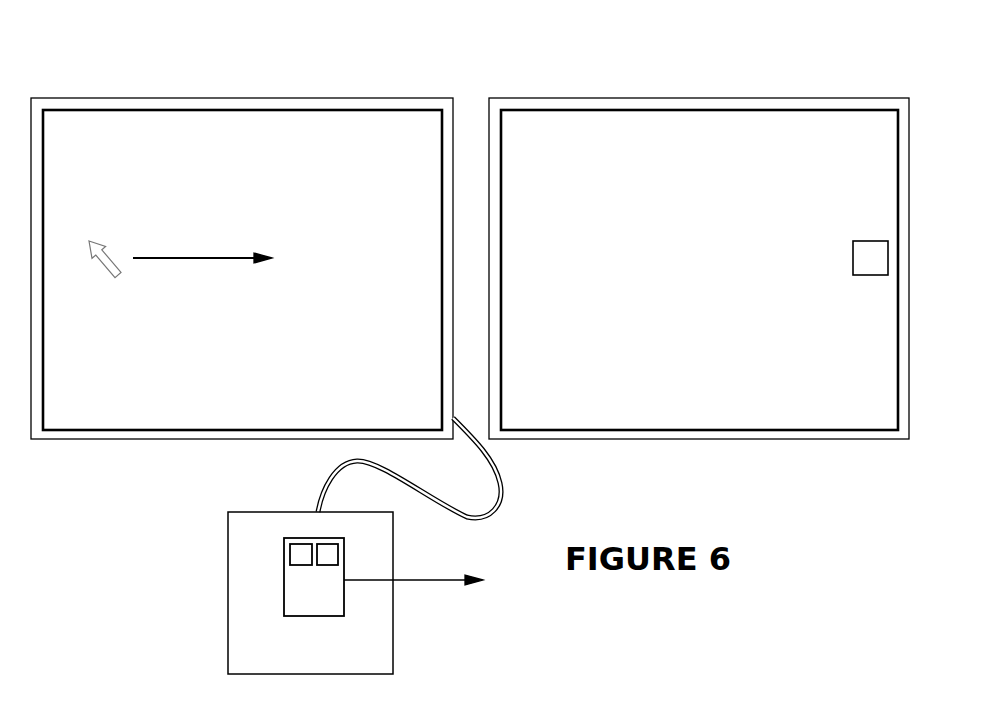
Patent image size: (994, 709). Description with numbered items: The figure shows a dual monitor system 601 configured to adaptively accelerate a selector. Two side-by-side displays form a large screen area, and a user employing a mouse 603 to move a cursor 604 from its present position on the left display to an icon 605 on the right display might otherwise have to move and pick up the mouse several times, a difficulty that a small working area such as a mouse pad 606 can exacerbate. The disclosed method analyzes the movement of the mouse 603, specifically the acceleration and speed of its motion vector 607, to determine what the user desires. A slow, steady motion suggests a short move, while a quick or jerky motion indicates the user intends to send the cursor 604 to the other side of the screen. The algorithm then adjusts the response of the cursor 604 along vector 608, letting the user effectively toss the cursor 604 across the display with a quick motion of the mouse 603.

The dual monitor system 601 is at (470, 238).
The mouse 603 is at (314, 577).
The cursor 604 is at (105, 268).
The icon 605 is at (853, 253).
The mouse pad 606 is at (310, 593).
The motion vector 607 is at (436, 580).
The vector 608 is at (203, 258).